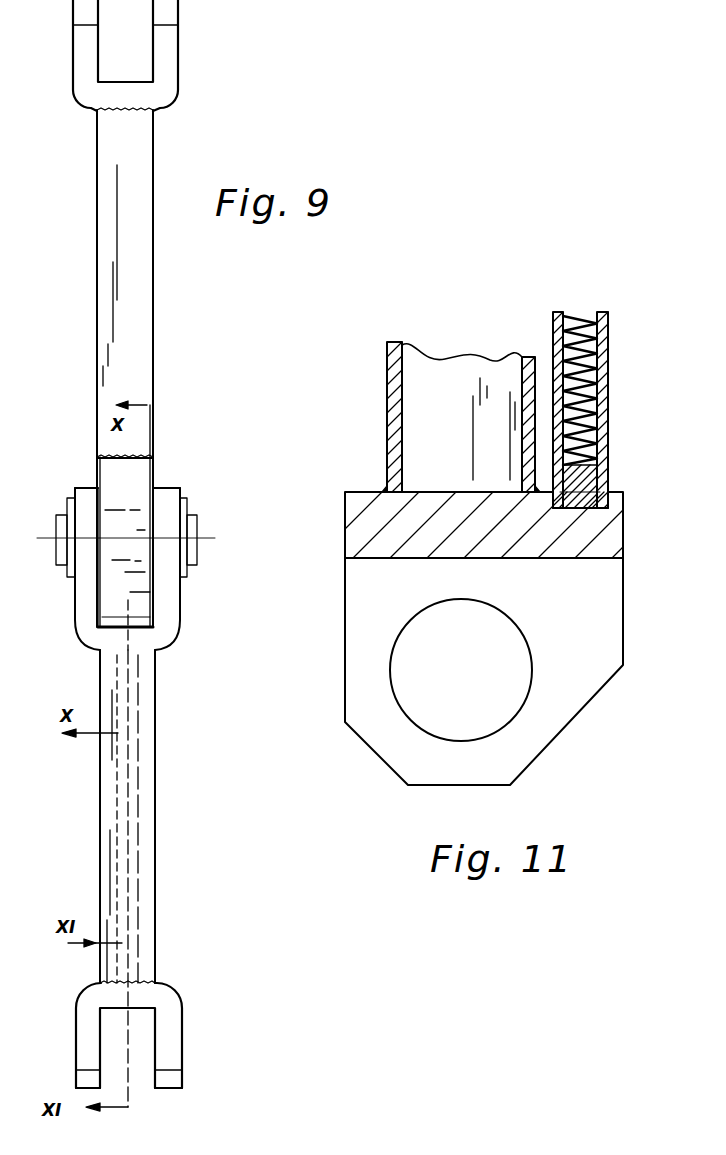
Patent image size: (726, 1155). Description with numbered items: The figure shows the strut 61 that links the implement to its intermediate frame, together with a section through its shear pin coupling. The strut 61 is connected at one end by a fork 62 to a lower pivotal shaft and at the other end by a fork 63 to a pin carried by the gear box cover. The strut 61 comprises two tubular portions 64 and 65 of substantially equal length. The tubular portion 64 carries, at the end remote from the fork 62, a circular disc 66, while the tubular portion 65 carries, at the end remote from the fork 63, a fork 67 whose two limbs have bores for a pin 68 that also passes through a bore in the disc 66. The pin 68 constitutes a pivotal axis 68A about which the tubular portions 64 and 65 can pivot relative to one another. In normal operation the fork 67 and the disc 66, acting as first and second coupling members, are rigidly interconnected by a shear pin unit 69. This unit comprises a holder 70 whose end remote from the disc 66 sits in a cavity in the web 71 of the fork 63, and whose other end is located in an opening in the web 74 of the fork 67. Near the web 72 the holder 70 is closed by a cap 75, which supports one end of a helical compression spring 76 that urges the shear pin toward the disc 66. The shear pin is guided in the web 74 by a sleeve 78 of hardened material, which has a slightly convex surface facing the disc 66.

In FIG. 9, the strut 61 is at (160, 296).
In FIG. 9, the fork 62 is at (172, 47).
In FIG. 9, the fork 63 is at (170, 1061).
In FIG. 11, the fork 63 is at (352, 614).
In FIG. 9, the tubular portion 64 is at (100, 163).
In FIG. 9, the tubular portion 65 is at (150, 790).
In FIG. 11, the tubular portion 65 is at (420, 357).
In FIG. 9, the circular disc 66 is at (140, 479).
In FIG. 9, the fork 67 is at (178, 500).
In FIG. 9, the pin 68 is at (195, 557).
In FIG. 9, the pivotal axis 68A is at (200, 540).
In FIG. 11, the shear pin unit 69 is at (612, 367).
In FIG. 9, the holder 70 is at (130, 854).
In FIG. 11, the holder 70 is at (553, 316).
In FIG. 11, the web 71 is at (612, 492).
In FIG. 9, the web 72 is at (145, 986).
In FIG. 11, the web 72 is at (426, 502).
In FIG. 9, the web 74 is at (140, 637).
In FIG. 11, the cap 75 is at (580, 500).
In FIG. 11, the helical compression spring 76 is at (578, 322).
In FIG. 9, the sleeve 78 is at (112, 626).